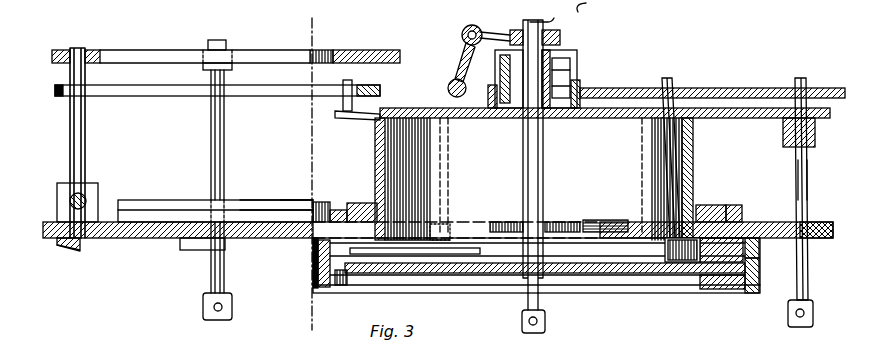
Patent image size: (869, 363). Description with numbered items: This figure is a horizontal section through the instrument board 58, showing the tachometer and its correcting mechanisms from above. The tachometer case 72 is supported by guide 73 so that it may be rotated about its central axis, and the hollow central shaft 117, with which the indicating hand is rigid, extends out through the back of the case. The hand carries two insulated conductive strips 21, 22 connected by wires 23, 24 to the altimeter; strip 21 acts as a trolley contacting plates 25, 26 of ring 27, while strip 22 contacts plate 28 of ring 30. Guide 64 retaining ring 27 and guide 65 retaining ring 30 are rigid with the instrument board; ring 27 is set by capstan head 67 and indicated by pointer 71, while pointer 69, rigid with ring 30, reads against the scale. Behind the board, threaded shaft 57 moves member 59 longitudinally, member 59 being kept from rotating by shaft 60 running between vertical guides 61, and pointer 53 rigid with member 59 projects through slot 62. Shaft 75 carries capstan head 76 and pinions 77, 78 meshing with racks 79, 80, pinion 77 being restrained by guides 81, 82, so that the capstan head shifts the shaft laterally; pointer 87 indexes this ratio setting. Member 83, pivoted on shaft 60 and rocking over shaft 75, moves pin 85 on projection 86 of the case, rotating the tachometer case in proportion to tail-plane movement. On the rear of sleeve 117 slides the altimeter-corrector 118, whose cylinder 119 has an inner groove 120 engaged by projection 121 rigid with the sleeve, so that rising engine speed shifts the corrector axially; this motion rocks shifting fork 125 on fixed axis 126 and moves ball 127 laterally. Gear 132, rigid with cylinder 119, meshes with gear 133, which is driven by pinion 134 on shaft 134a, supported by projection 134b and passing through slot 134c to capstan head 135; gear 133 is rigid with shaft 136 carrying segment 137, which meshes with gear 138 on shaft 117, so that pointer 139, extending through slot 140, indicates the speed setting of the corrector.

The conductive strip 21 is at (392, 291).
The conductive strip 22 is at (462, 262).
The wire 23 is at (554, 20).
The wire 24 is at (592, 6).
The plate 25 is at (754, 270).
The plate 26 is at (318, 264).
The ring 27 is at (318, 250).
The plate 28 is at (714, 289).
The ring 30 is at (350, 204).
The pointer 53 is at (76, 246).
The shaft 57 is at (86, 200).
The instrument board 58 is at (135, 238).
The member 59 is at (97, 184).
The shaft 60 is at (72, 130).
The vertical guides 61 is at (66, 50).
The slot 62 is at (86, 240).
The guide 64 is at (753, 246).
The guide 65 is at (666, 250).
The capstan head 67 is at (548, 322).
The pointer 69 is at (368, 284).
The pointer 71 is at (412, 262).
The tachometer case 72 is at (693, 146).
The guide 73 is at (360, 204).
The shaft 75 is at (224, 168).
The capstan head 76 is at (202, 305).
The pinion 77 is at (205, 210).
The pinion 78 is at (207, 46).
The rack 79 is at (268, 212).
The rack 80 is at (271, 58).
The guide 81 is at (262, 178).
The guide 82 is at (295, 200).
The member 83 is at (140, 94).
The pin 85 is at (343, 103).
The projection 86 is at (362, 119).
The pointer 87 is at (188, 250).
The central shaft 117 is at (545, 180).
The altimeter-corrector 118 is at (566, 42).
The cylinder 119 is at (575, 58).
The groove 120 is at (575, 72).
The projection 121 is at (497, 68).
The shifting fork 125 is at (512, 30).
The fixed axis 126 is at (462, 36).
The ball 127 is at (449, 90).
The gear 132 is at (572, 86).
The gear 133 is at (710, 88).
The pinion 134 is at (796, 78).
The shaft 134a is at (806, 178).
The projection 134b is at (727, 118).
The slot 134c is at (806, 240).
The capstan head 135 is at (788, 312).
The shaft 136 is at (667, 78).
The segment 137 is at (598, 222).
The gear 138 is at (556, 222).
The pointer 139 is at (430, 226).
The slot 140 is at (433, 212).